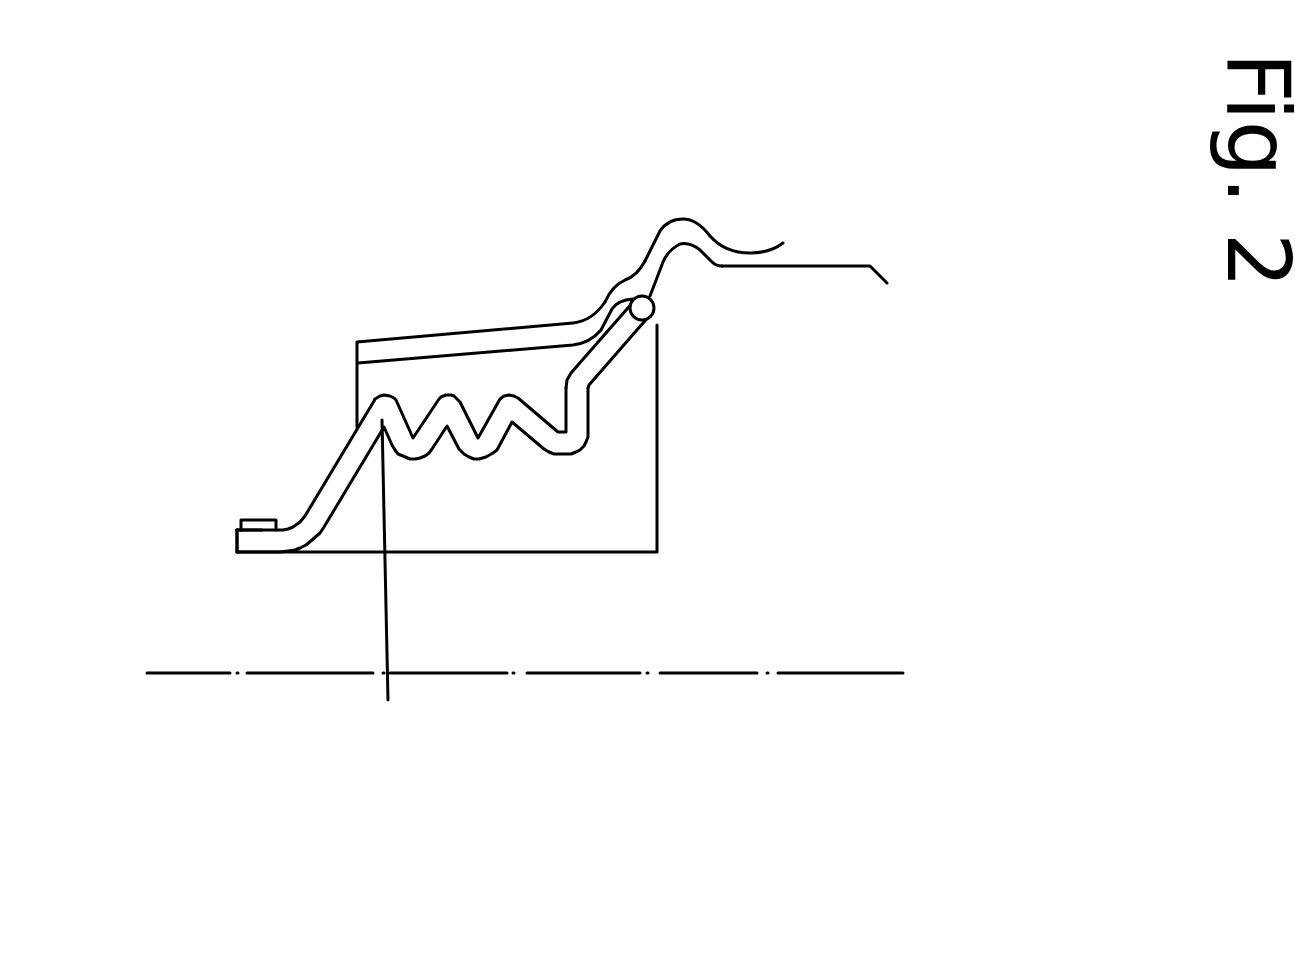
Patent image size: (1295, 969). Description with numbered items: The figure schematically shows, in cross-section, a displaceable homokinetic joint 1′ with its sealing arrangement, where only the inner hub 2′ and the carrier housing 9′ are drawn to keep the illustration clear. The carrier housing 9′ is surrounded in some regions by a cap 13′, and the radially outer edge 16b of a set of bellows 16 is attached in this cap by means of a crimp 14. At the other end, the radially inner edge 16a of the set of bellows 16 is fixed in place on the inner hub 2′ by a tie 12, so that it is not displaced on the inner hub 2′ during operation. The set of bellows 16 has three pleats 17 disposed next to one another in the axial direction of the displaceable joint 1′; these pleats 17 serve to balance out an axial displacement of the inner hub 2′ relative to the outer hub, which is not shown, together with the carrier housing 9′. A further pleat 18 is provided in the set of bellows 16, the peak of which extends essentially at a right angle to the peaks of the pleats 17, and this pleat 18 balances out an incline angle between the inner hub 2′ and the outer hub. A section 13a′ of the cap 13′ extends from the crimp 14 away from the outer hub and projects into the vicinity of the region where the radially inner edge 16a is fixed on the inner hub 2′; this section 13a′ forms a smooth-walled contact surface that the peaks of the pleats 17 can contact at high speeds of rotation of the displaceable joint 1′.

The displaceable joint 1′ is at (680, 749).
The inner hub 2′ is at (583, 622).
The carrier housing 9′ is at (835, 263).
The tie 12 is at (253, 522).
The cap 13′ is at (683, 220).
The section of the cap 13a′ is at (390, 341).
The crimp 14 is at (606, 281).
The set of bellows 16 is at (335, 460).
The radially inner edge 16a is at (252, 543).
The radially outer edge 16b is at (645, 306).
The pleats 17 is at (388, 597).
The pleat 18 is at (572, 380).